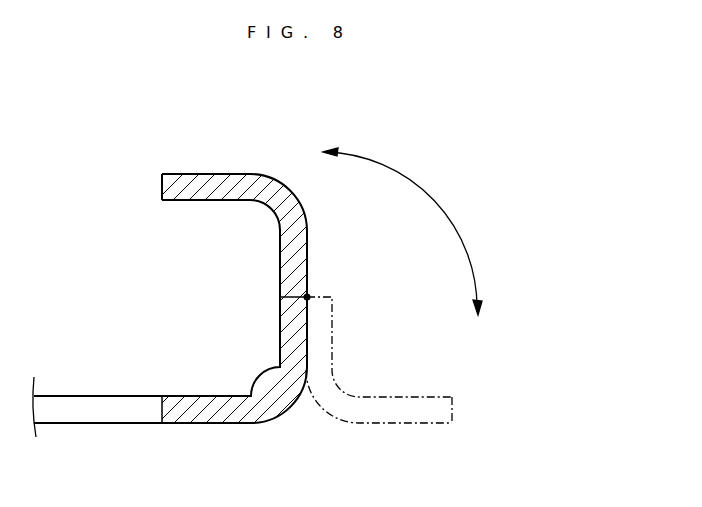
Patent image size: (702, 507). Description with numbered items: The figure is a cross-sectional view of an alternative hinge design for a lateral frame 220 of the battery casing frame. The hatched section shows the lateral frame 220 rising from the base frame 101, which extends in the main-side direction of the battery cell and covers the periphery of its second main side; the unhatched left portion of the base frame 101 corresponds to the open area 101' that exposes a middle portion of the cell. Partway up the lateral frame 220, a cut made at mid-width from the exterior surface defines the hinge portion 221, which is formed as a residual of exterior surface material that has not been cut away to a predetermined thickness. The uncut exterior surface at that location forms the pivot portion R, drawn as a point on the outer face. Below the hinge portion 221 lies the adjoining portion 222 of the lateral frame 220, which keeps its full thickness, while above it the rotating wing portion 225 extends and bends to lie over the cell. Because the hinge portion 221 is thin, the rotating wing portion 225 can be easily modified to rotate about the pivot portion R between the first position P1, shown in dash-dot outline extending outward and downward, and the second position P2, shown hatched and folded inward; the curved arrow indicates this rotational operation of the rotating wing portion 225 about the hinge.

The lateral frame 220 is at (281, 148).
The rotating wing portion 225 is at (245, 173).
The hinge portion 221 is at (280, 290).
The other portion of the lateral frame 222 is at (280, 343).
The base frame 101 is at (195, 434).
The open area 101' is at (79, 434).
The pivot portion R is at (310, 296).
The first position P1 is at (453, 410).
The second position P2 is at (160, 187).